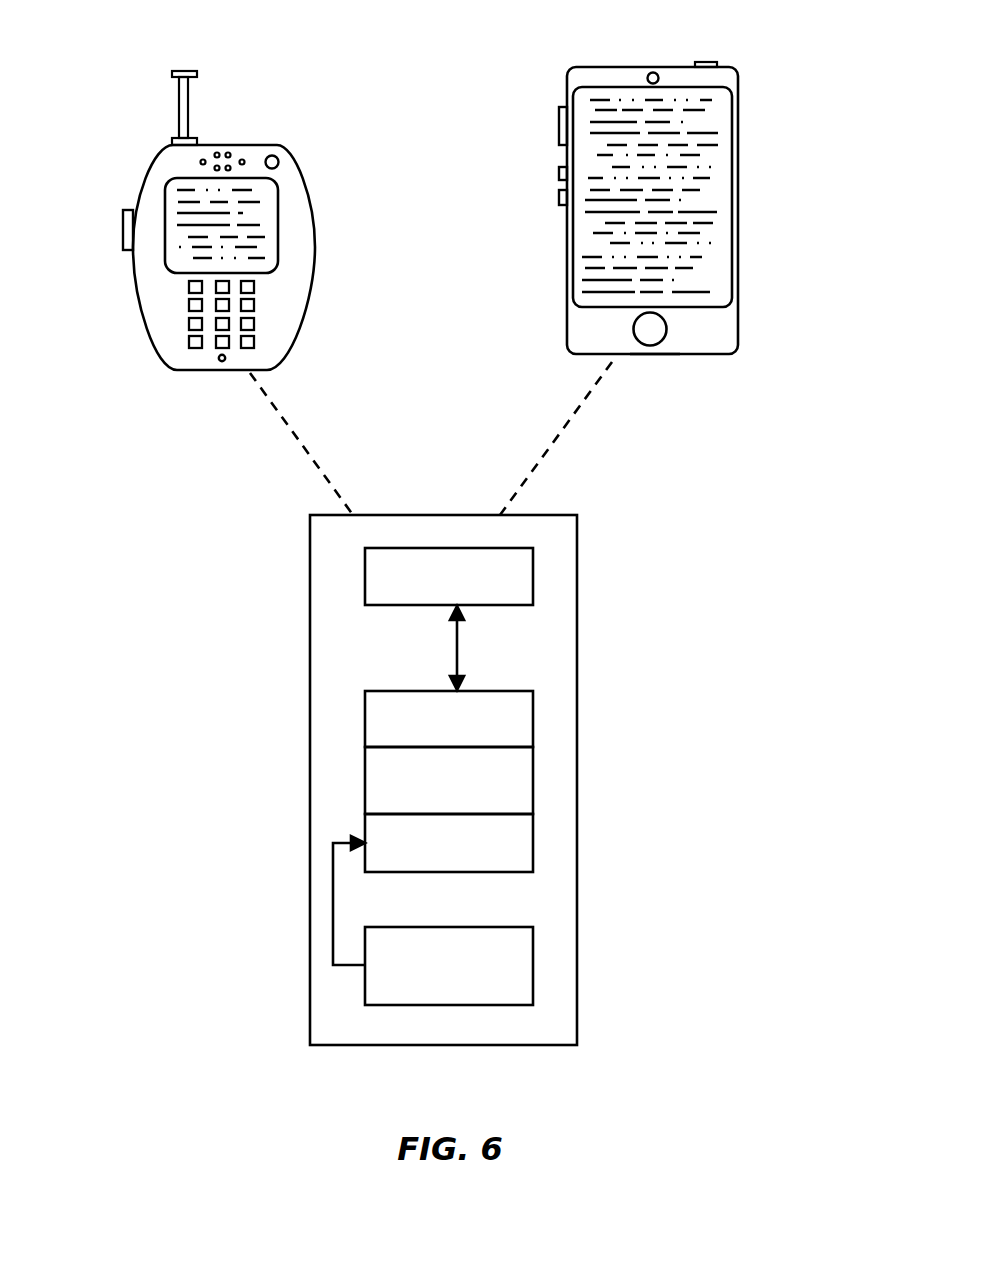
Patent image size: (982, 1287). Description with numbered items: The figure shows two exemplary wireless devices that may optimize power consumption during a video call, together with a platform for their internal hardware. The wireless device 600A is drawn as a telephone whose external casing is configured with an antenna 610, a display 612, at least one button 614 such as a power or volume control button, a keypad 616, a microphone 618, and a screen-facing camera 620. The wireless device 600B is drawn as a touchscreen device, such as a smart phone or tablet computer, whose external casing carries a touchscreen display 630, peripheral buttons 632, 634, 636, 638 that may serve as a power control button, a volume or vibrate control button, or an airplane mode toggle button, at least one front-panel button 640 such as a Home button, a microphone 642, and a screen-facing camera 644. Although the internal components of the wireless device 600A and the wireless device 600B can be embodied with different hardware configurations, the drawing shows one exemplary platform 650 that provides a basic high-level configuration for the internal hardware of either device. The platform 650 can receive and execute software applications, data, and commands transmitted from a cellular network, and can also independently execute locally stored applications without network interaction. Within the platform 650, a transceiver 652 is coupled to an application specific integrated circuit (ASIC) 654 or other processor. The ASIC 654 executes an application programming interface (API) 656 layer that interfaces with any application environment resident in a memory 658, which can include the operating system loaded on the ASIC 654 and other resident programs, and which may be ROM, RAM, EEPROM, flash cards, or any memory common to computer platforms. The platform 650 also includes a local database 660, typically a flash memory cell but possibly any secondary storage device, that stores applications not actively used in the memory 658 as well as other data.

The wireless device 600A is at (285, 350).
The antenna 610 is at (178, 101).
The display 612 is at (282, 223).
The button 614 is at (123, 232).
The keypad 616 is at (254, 305).
The microphone 618 is at (222, 371).
The screen-facing camera 620 is at (276, 154).
The wireless device 600B is at (613, 67).
The touchscreen display 630 is at (735, 127).
The peripheral button 632 is at (704, 62).
The peripheral button 634 is at (558, 128).
The peripheral button 636 is at (558, 174).
The peripheral button 638 is at (558, 202).
The front-panel button 640 is at (633, 330).
The microphone 642 is at (645, 355).
The screen-facing camera 644 is at (653, 72).
The platform 650 is at (310, 575).
The transceiver 652 is at (535, 573).
The application specific integrated circuit (ASIC) 654 is at (535, 718).
The application programming interface (API) layer 656 is at (535, 780).
The memory 658 is at (535, 842).
The local database 660 is at (535, 963).